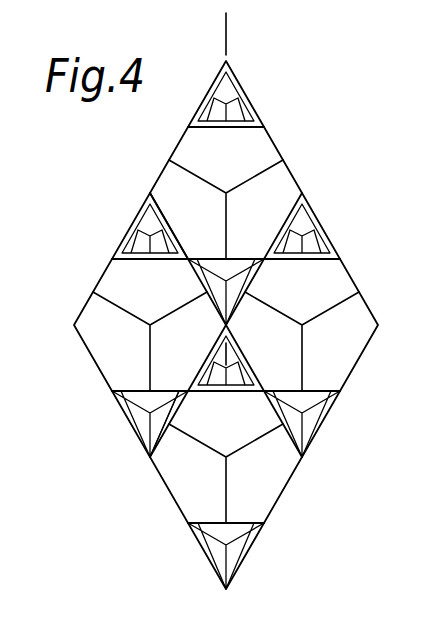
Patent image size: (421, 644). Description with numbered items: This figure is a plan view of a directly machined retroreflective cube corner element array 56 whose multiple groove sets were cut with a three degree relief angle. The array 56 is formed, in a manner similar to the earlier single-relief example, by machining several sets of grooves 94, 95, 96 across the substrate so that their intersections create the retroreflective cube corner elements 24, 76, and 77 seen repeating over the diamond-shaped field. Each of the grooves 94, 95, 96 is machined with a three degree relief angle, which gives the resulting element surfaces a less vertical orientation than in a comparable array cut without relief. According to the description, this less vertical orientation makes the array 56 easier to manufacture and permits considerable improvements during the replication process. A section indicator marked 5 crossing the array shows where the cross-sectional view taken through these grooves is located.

The section line 5- 5 is at (230, 28).
The retroreflective cube corner element 24 is at (236, 270).
The retroreflective cube corner element array 56 is at (318, 432).
The retroreflective cube corner element 76 is at (237, 108).
The retroreflective cube corner element 77 is at (258, 190).
The groove 94 is at (222, 127).
The groove 95 is at (161, 213).
The groove 96 is at (166, 424).